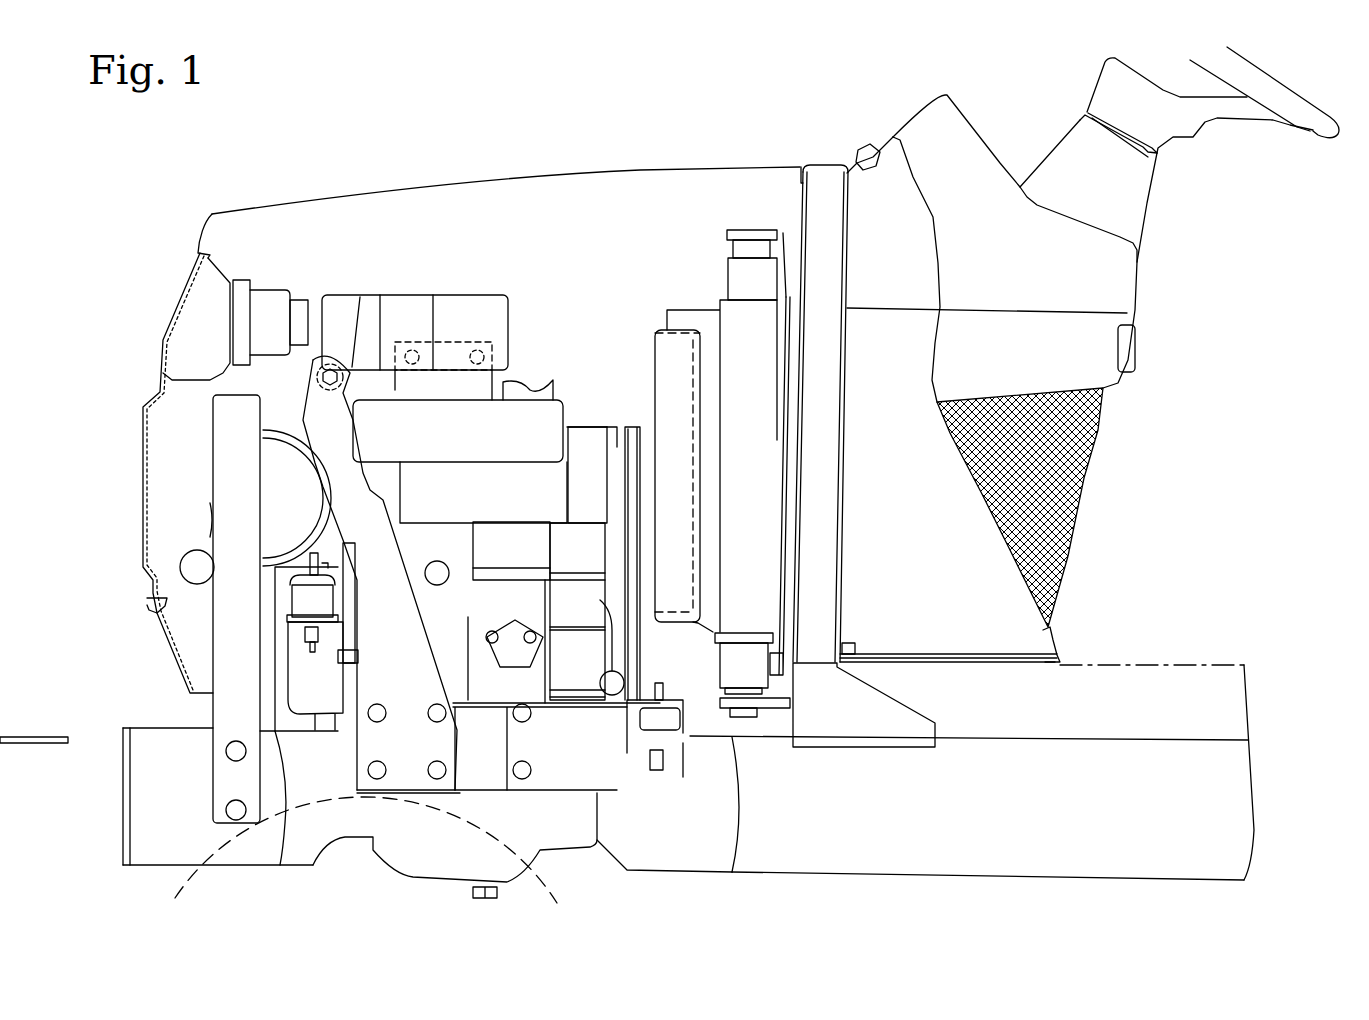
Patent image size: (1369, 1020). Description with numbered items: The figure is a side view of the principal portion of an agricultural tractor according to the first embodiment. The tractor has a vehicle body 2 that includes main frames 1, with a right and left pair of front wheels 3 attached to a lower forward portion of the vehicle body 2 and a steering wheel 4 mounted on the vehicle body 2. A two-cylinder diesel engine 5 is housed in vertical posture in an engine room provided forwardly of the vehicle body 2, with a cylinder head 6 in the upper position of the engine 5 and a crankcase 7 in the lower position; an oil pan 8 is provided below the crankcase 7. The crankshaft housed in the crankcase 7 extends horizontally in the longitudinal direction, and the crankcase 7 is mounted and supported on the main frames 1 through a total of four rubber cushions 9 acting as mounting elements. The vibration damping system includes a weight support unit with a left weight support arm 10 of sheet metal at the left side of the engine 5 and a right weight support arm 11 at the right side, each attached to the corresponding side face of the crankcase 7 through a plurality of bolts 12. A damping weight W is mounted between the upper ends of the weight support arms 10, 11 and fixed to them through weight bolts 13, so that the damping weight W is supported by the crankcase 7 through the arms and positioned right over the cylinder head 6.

The main frames 1 is at (1248, 806).
The vehicle body 2 is at (125, 727).
The front wheels 3 is at (172, 897).
The steering wheel 4 is at (1313, 132).
The engine 5 is at (578, 354).
The cylinder head 6 is at (400, 492).
The crankcase 7 is at (430, 578).
The oil pan 8 is at (413, 847).
The rubber cushions 9 is at (300, 603).
The left weight support arm 10 is at (303, 410).
The right weight support arm 11 is at (462, 342).
The bolts 12 is at (436, 707).
The weight bolts 13 is at (330, 366).
The damping weight W is at (405, 300).